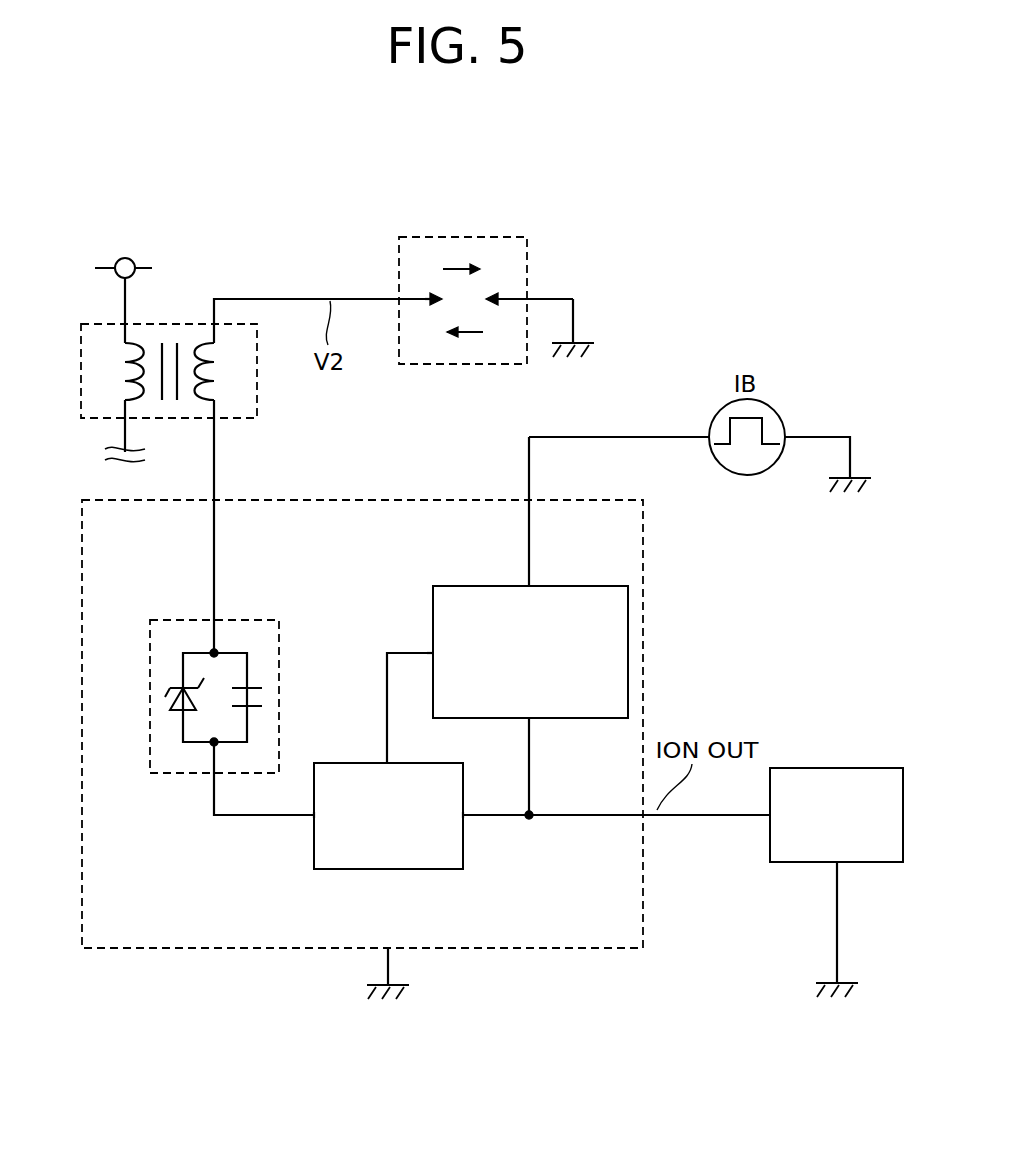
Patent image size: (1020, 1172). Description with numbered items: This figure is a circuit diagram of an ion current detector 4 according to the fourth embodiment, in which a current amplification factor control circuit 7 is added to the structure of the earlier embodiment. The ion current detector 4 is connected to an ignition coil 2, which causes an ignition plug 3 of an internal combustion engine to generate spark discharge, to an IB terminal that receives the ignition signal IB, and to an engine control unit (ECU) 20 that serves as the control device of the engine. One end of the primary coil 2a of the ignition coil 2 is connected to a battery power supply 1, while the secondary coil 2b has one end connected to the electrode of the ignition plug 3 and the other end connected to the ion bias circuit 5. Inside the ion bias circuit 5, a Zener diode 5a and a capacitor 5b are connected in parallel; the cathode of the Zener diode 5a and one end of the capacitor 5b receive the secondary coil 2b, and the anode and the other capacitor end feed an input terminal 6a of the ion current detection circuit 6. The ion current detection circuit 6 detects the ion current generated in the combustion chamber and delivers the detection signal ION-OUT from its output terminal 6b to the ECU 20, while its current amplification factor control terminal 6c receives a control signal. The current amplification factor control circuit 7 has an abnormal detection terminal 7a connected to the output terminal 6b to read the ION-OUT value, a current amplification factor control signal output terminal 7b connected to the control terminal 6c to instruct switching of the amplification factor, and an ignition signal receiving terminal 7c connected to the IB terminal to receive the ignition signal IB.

The battery power supply 1 is at (123, 258).
The ignition coil 2 is at (80, 370).
The primary coil 2a is at (122, 372).
The secondary coil 2b is at (216, 372).
The ignition plug 3 is at (465, 236).
The ion current detector 4 is at (331, 498).
The ion bias circuit 5 is at (177, 618).
The Zener diode 5a is at (166, 700).
The capacitor 5b is at (265, 698).
The ion current detection circuit 6 is at (364, 762).
The input terminal 6a is at (312, 823).
The output terminal 6b is at (466, 822).
The current amplification factor control terminal 6c is at (392, 762).
The current amplification factor control circuit 7 is at (485, 585).
The abnormal detection terminal 7a is at (533, 720).
The current amplification factor control signal output terminal 7b is at (431, 650).
The ignition signal receiving terminal 7c is at (533, 585).
The engine control unit (ECU) 20 is at (840, 767).